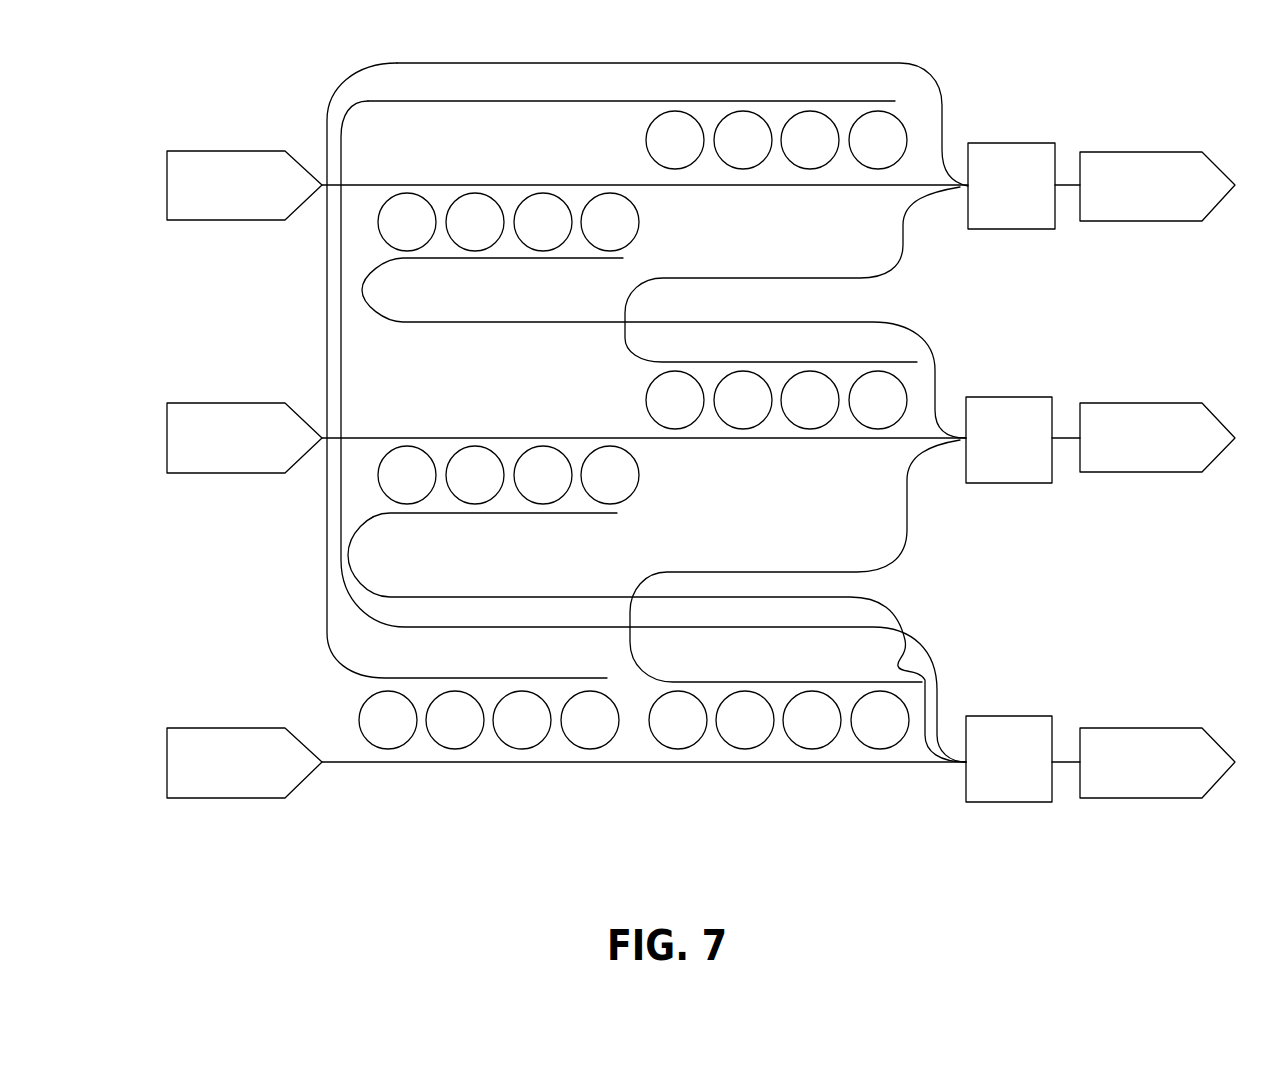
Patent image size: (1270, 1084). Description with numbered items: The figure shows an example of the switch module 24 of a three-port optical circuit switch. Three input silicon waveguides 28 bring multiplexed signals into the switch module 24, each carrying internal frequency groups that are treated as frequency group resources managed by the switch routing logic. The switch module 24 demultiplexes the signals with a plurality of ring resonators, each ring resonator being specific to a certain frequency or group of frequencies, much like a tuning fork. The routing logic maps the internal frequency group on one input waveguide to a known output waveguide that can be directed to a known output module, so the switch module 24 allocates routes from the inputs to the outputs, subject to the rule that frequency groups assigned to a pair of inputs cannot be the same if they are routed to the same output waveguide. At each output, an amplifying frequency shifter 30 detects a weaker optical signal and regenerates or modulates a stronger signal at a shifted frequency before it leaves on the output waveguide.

The switch module 24 is at (993, 81).
The silicon waveguide 28 is at (1221, 698).
The amplifying frequency shifter 30 is at (1015, 143).